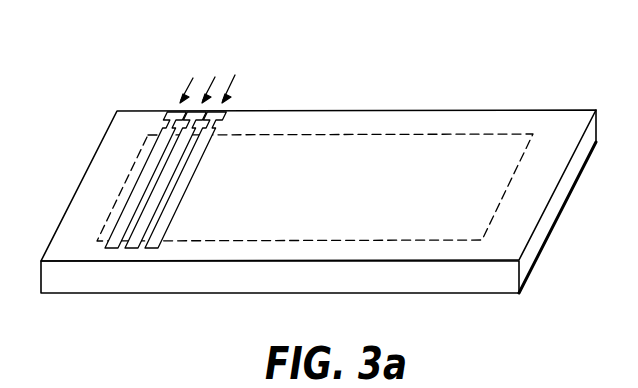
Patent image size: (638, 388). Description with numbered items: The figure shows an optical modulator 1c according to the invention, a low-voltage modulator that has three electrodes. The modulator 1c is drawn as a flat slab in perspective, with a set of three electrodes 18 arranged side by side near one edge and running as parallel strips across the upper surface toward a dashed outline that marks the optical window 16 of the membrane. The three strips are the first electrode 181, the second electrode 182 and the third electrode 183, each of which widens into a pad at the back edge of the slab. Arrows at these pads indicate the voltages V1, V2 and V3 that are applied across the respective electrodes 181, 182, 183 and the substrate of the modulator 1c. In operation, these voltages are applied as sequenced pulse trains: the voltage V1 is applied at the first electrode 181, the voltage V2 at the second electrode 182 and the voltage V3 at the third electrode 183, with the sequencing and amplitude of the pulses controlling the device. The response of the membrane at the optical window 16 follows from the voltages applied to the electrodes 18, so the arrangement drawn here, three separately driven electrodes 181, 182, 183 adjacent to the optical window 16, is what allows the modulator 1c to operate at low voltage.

The optical modulator 1c is at (459, 72).
The optical window 16 is at (157, 191).
The electrodes 18 is at (146, 233).
The first electrode 181 is at (107, 249).
The second electrode 182 is at (128, 249).
The third electrode 183 is at (150, 249).
The voltage at the first electrode V1 is at (190, 85).
The voltage at the second electrode V2 is at (208, 83).
The voltage at the third electrode V3 is at (237, 87).